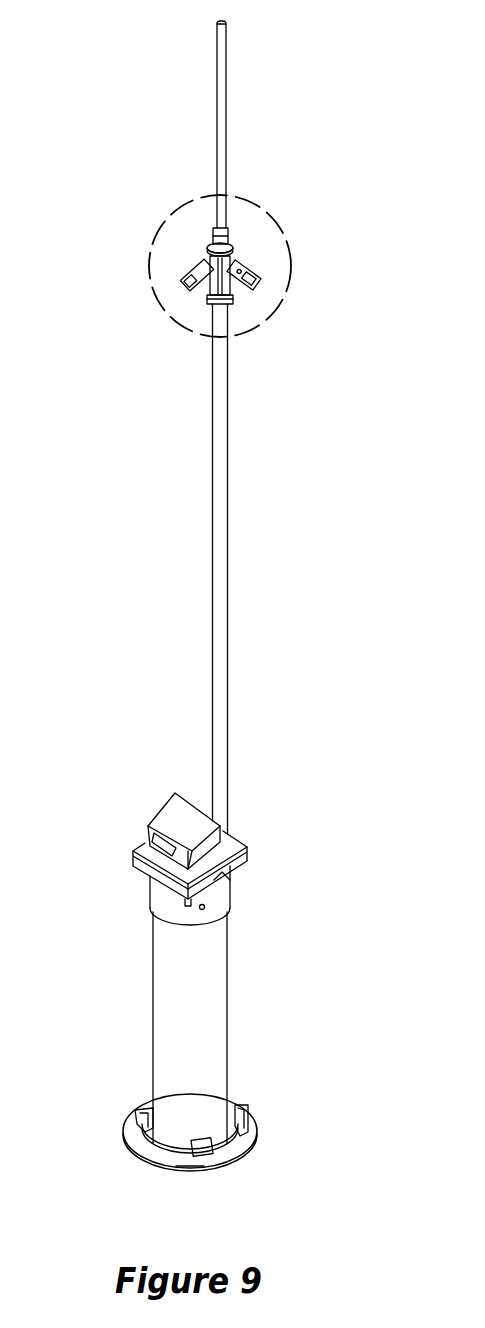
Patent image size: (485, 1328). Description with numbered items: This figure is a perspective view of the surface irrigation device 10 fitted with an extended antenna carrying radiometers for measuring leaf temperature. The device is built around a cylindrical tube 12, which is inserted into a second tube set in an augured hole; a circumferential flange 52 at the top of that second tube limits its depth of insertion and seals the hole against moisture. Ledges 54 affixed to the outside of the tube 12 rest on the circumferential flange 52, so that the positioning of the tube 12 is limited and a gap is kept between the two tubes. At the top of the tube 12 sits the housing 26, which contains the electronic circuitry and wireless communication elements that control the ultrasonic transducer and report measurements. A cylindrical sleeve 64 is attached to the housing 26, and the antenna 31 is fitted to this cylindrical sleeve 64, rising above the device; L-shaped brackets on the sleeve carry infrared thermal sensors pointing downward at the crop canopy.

The surface irrigation device 10 is at (187, 596).
The antenna 31 is at (223, 123).
The cylindrical sleeve 64 is at (220, 487).
The housing 26 is at (220, 837).
The cylindrical tube 12 is at (224, 1007).
The circumferential flange 52 is at (248, 1122).
The ledges 54 is at (145, 1118).